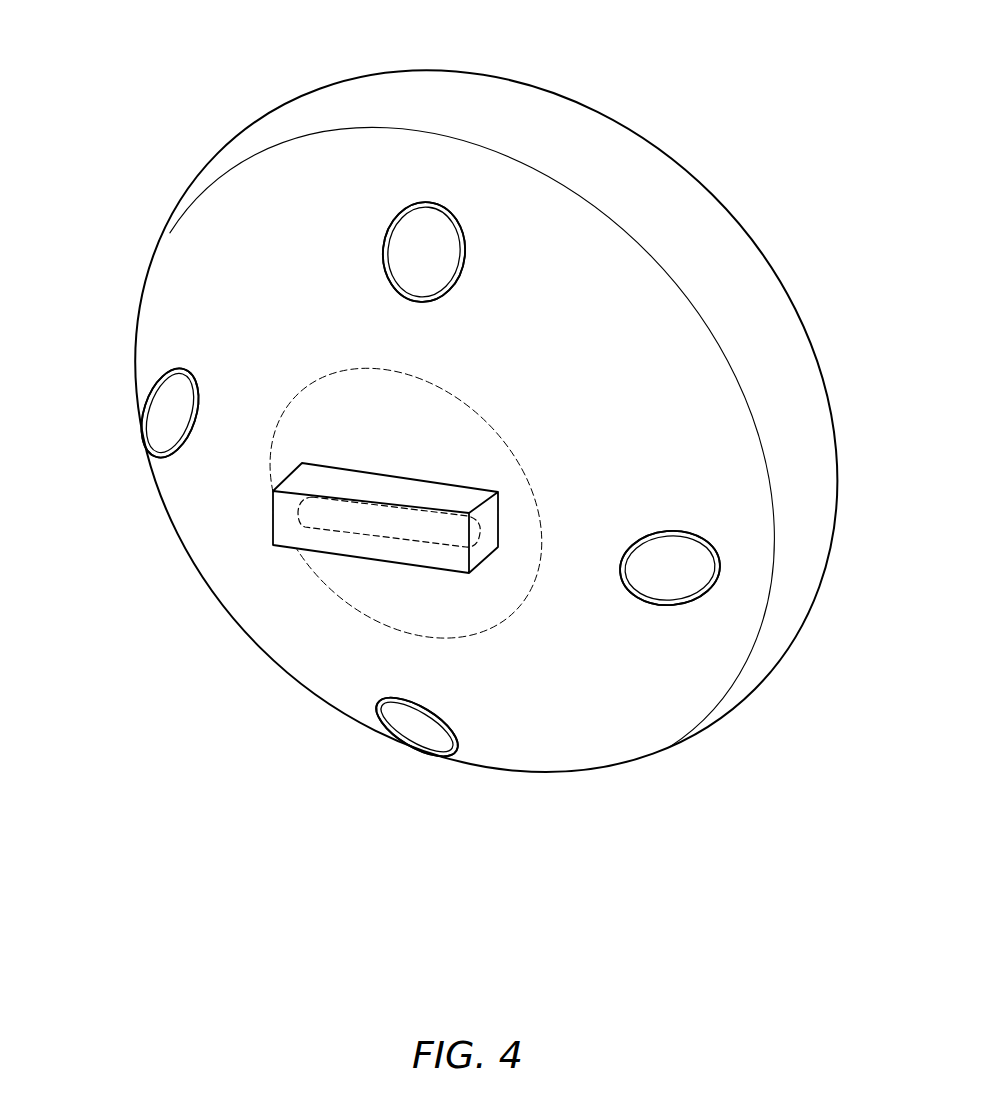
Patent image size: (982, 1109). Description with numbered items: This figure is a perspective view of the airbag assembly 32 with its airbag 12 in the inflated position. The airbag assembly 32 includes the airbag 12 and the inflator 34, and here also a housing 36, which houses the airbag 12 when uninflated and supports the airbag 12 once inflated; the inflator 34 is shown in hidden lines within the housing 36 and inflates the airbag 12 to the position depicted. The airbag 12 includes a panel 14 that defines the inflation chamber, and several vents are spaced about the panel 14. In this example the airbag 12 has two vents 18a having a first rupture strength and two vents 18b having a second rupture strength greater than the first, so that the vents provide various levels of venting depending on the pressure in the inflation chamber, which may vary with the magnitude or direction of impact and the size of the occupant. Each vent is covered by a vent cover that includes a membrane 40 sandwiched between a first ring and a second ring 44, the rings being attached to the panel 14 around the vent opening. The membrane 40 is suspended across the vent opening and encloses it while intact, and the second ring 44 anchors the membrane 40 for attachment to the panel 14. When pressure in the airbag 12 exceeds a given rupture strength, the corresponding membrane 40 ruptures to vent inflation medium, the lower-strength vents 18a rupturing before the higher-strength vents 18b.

The airbag 12 is at (672, 153).
The panel 14 is at (187, 283).
The vent 18a is at (153, 362).
The vent 18b is at (432, 197).
The airbag assembly 32 is at (203, 602).
The inflator 34 is at (352, 537).
The housing 36 is at (272, 518).
The membrane 40 is at (413, 252).
The second ring 44 is at (428, 303).